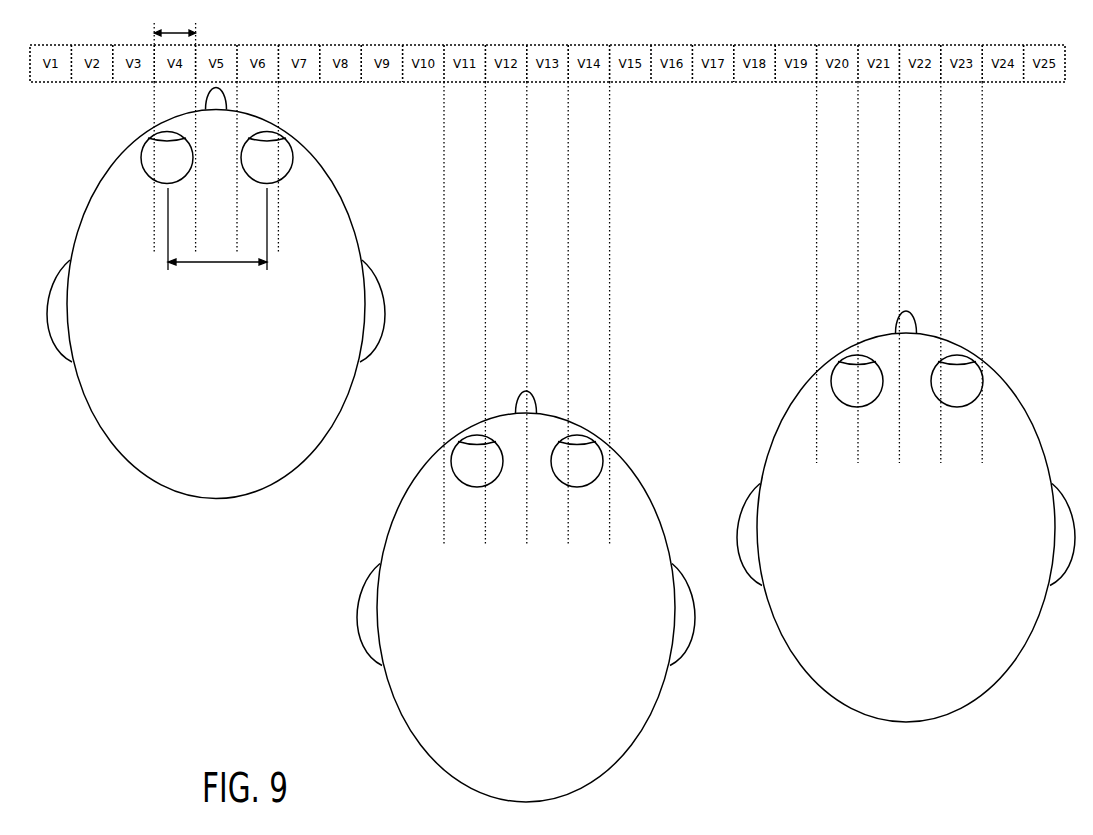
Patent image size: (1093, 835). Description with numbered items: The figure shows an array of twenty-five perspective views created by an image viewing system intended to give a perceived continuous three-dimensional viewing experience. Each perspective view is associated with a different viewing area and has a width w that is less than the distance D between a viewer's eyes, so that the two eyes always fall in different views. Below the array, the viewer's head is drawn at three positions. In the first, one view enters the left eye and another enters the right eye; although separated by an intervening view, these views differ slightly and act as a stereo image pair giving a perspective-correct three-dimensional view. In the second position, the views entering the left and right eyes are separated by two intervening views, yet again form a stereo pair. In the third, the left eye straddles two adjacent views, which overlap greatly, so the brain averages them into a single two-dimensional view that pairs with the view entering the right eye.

The distance between a viewer's eyes D is at (217, 235).
The width of a perspective view w is at (174, 27).